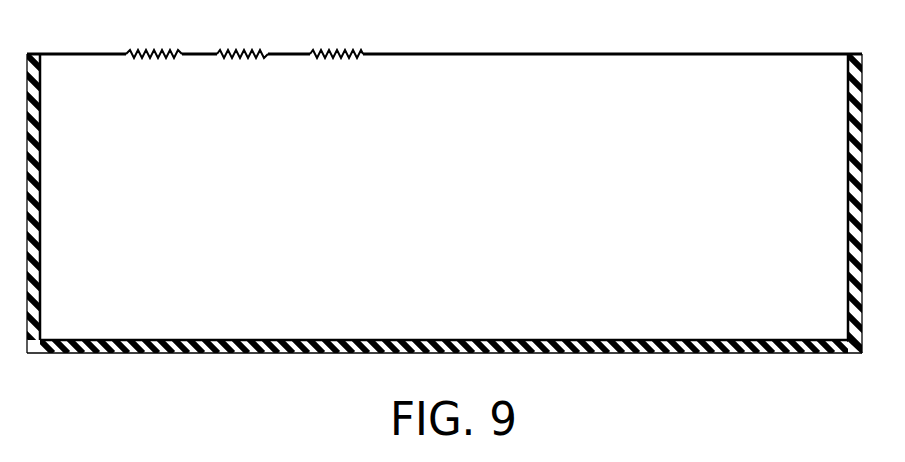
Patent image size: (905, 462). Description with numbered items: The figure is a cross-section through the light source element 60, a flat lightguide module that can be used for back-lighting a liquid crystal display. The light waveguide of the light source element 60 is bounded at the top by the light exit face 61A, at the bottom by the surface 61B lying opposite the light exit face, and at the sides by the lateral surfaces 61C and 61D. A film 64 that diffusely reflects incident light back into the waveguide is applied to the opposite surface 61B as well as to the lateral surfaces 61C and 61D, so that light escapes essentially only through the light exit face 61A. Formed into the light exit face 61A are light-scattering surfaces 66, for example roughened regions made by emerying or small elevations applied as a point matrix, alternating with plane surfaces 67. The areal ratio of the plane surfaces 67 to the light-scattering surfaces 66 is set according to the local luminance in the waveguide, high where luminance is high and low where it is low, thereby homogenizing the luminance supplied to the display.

The light source element 60 is at (444, 210).
The light exit face 61A is at (444, 105).
The surface lying opposite the light exit face 61B is at (450, 338).
The lateral surface 61C is at (41, 178).
The lateral surface 61D is at (848, 180).
The film 64 is at (855, 346).
The light-scattering surfaces 66 is at (237, 56).
The plane surfaces 67 is at (288, 56).